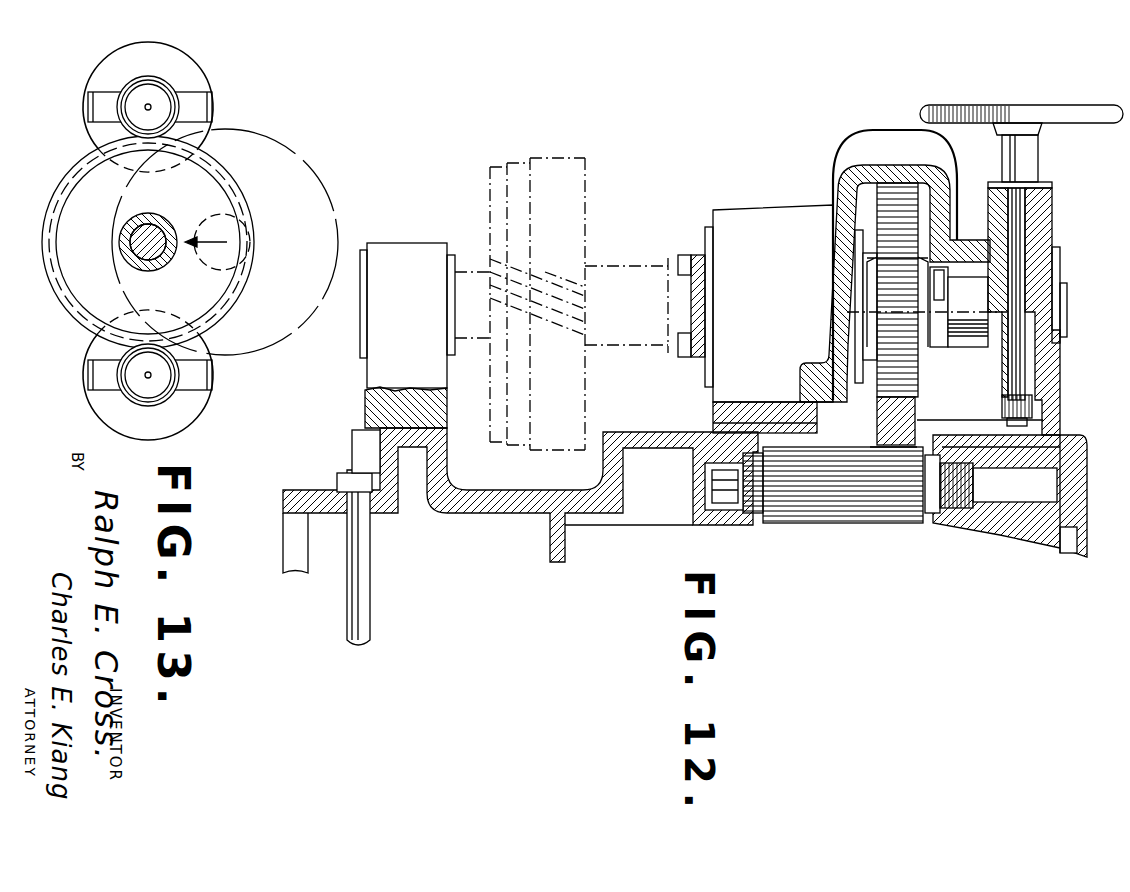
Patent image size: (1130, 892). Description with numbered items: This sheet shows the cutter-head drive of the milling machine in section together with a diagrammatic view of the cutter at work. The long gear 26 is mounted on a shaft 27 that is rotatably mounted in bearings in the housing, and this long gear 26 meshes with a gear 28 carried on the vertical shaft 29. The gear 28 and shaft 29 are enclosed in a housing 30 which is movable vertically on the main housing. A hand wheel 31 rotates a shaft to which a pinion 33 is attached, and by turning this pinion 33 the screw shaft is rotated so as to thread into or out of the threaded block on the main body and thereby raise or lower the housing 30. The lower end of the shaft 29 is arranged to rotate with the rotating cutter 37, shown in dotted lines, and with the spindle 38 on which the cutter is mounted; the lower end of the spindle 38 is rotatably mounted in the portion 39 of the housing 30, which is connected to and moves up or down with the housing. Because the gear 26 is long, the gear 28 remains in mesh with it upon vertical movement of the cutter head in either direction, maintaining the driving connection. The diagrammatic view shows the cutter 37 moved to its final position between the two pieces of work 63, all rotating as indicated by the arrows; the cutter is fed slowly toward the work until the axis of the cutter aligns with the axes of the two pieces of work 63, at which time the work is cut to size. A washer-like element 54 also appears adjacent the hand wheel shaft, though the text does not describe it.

In FIG. 12, the long gear 26 is at (796, 514).
In FIG. 12, the shaft 27 is at (973, 322).
In FIG. 12, the gear 28 is at (918, 377).
In FIG. 12, the vertical shaft 29 is at (692, 256).
In FIG. 12, the housing 30 is at (797, 218).
In FIG. 12, the hand wheel 31 is at (1096, 118).
In FIG. 12, the pinion 33 is at (1028, 402).
In FIG. 13, the rotating cutter 37 is at (44, 240).
In FIG. 12, the rotating cutter 37 is at (548, 160).
In FIG. 12, the spindle 38 is at (632, 266).
In FIG. 12, the portion of the housing 39 is at (413, 250).
In FIG. 12, the washer 54 is at (1020, 363).
In FIG. 13, the work 63 is at (165, 88).